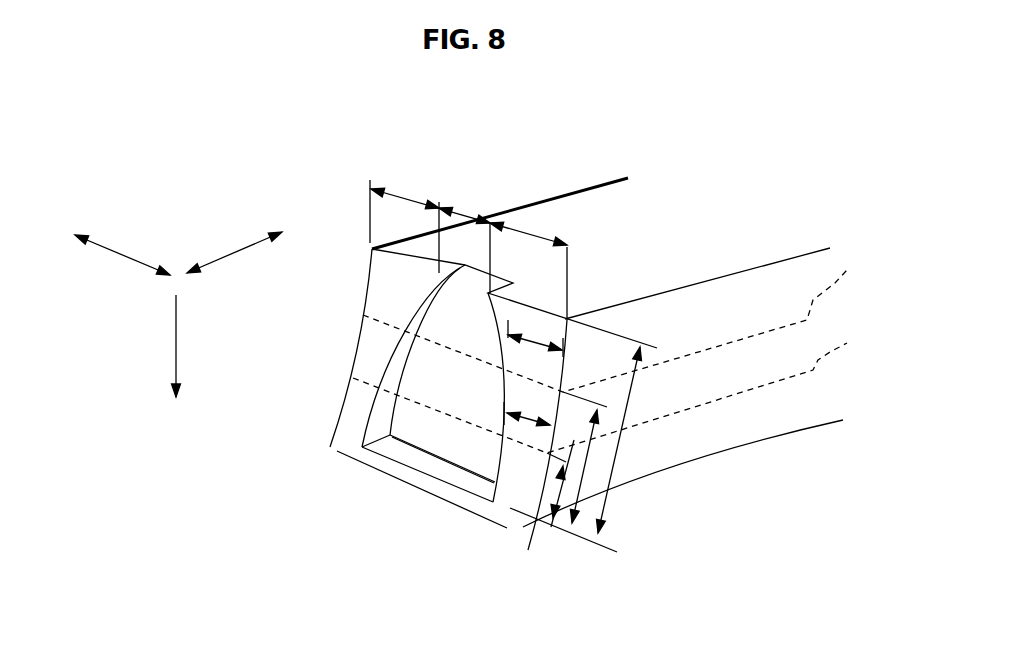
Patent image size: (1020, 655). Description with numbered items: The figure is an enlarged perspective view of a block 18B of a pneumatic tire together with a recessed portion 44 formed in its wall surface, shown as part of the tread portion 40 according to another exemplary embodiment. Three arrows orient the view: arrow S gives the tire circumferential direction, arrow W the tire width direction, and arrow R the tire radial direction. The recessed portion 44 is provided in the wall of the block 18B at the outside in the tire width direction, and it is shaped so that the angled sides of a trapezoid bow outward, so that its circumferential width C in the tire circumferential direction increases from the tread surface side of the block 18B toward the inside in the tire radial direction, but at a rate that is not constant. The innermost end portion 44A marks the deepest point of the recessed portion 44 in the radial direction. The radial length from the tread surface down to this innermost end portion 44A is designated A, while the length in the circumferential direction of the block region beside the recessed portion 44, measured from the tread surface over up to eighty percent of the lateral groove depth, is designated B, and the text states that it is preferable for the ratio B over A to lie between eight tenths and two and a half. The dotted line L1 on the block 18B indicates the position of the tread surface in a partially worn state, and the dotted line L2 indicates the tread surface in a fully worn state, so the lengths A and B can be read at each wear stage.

The cutting insert / tip body 40 is at (345, 165).
The block 18B is at (603, 187).
The recessed portion 44 is at (440, 408).
The innermost end portion 44A is at (420, 465).
The dotted line L1 is at (621, 332).
The dotted line L2 is at (618, 397).
The length A is at (622, 458).
The length B is at (407, 198).
The circumferential width C is at (462, 215).
The arrow S is at (123, 254).
The arrow W is at (235, 250).
The arrow R is at (177, 340).